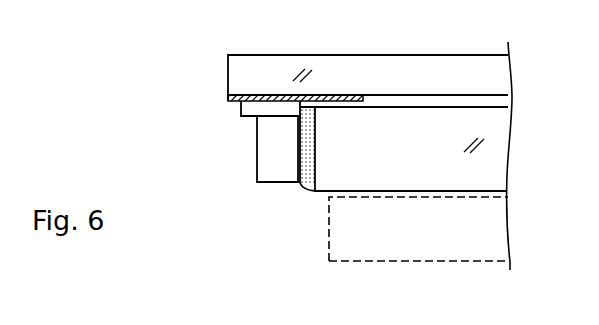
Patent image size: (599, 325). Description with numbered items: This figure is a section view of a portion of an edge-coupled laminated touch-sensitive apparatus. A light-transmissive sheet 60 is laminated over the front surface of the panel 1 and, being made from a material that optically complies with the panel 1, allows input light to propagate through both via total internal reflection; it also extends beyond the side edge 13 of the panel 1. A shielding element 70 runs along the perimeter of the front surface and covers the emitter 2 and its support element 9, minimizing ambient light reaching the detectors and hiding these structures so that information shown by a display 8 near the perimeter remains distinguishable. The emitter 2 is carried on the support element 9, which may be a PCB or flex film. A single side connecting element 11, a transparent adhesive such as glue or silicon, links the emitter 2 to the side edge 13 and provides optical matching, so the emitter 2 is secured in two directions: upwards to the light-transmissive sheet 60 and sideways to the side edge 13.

The panel 1 is at (424, 155).
The emitter 2 is at (278, 153).
The display 8 is at (468, 238).
The support element 9 is at (246, 112).
The side connecting element 11 is at (306, 137).
The side edge 13 is at (317, 152).
The light-transmissive sheet 60 is at (423, 83).
The shielding element 70 is at (326, 99).